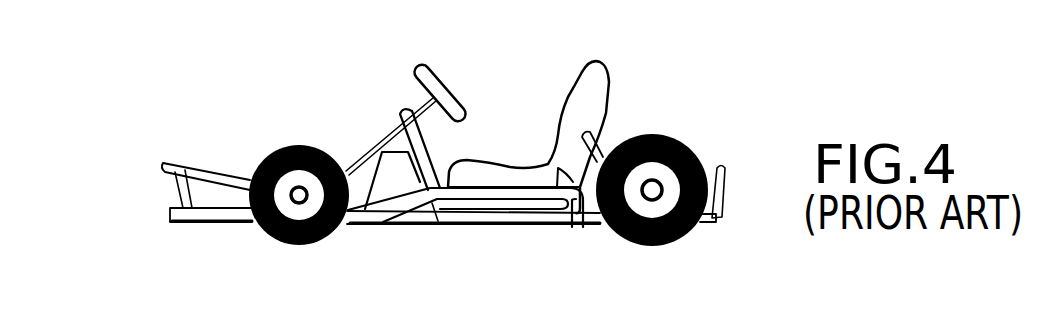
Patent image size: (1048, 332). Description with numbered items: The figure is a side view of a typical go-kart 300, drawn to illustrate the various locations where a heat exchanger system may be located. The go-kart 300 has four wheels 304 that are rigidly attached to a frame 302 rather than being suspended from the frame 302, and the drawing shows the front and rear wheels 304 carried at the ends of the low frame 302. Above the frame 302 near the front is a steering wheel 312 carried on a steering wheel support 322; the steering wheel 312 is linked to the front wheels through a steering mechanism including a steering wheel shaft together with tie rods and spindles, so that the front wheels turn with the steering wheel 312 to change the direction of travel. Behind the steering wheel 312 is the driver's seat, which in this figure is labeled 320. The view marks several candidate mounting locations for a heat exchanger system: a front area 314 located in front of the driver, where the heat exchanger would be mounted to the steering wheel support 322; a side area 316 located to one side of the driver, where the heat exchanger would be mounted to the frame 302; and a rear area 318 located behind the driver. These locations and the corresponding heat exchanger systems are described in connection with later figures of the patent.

The go-kart 300 is at (687, 83).
The frame 302 is at (452, 222).
The wheels 304 is at (263, 155).
The steering wheel 312 is at (427, 77).
The front area 314 is at (364, 141).
The side area 316 is at (583, 218).
The rear area 318 is at (658, 127).
The seat 320 is at (593, 80).
The steering wheel support 322 is at (403, 107).